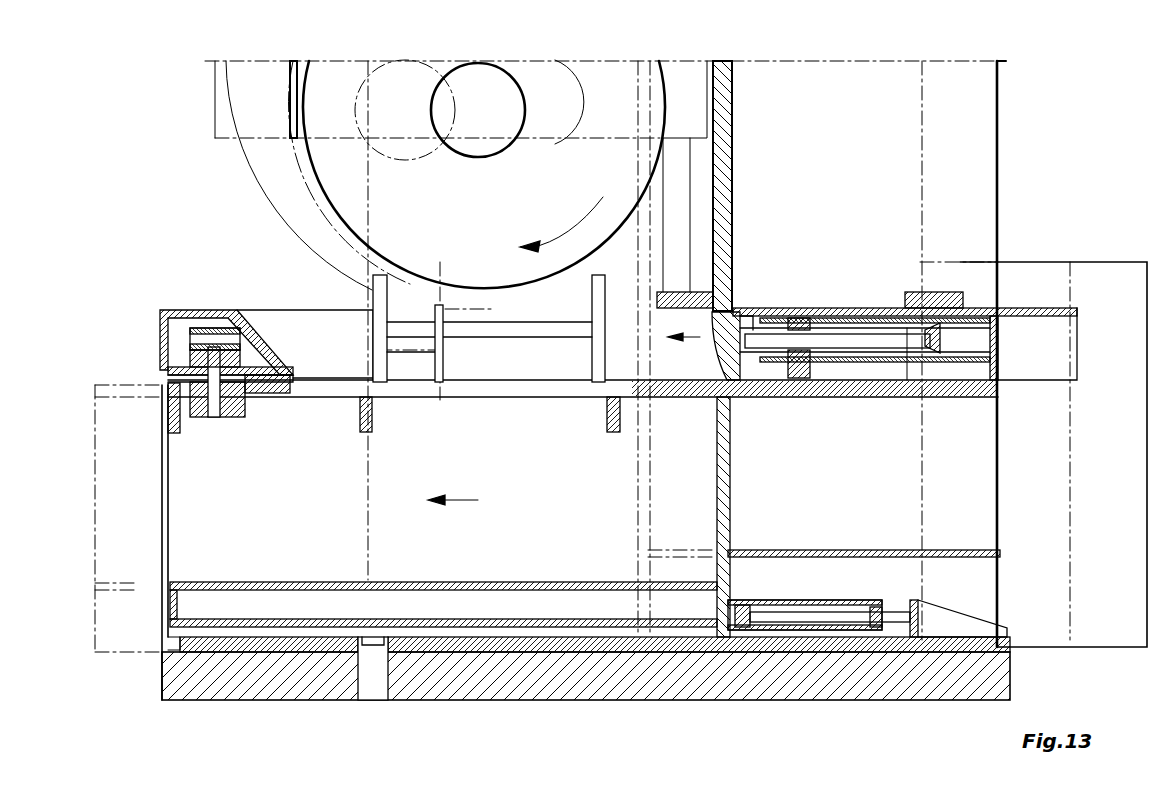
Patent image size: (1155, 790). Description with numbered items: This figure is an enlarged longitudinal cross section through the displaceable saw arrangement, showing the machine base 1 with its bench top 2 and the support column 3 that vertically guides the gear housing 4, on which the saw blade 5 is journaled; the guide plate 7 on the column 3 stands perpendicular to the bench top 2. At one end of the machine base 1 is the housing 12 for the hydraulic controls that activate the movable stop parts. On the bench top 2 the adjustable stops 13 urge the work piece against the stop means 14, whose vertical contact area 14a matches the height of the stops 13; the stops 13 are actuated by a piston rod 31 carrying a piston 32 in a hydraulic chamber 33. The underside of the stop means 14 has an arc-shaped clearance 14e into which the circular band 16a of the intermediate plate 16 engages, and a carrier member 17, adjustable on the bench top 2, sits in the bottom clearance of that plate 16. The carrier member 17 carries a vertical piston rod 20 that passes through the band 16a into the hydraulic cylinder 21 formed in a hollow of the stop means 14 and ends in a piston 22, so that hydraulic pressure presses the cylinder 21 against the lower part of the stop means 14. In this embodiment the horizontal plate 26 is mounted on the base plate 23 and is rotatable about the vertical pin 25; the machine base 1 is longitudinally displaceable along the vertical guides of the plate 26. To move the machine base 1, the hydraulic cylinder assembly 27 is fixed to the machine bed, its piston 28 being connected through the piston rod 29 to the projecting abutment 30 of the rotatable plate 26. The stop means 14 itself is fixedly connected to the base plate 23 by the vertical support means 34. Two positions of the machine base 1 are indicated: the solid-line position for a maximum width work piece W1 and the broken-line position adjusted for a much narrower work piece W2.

The machine base 1 is at (236, 493).
The bench top 2 is at (555, 392).
The support column 3 is at (998, 90).
The gear housing 4 is at (297, 94).
The saw blade 5 is at (333, 162).
The guide plate 7 is at (725, 166).
The housing 12 is at (1105, 647).
The adjustable stops 13 is at (780, 312).
The stop means 14 is at (307, 318).
The vertical contact area 14a is at (372, 355).
The clearance 14e is at (167, 360).
The intermediate plate 16 is at (165, 400).
The circular band 16a is at (190, 366).
The carrier member 17 is at (200, 420).
The piston rod 20 is at (161, 327).
The hydraulic cylinder 21 is at (225, 335).
The piston 22 is at (200, 352).
The base plate 23 is at (656, 695).
The vertical pin 25 is at (370, 685).
The horizontal plate 26 is at (210, 648).
The hydraulic cylinder assembly 27 is at (740, 630).
The piston 28 is at (757, 625).
The piston rod 29 is at (812, 625).
The projecting abutment 30 is at (913, 630).
The piston rod 31 is at (842, 340).
The piston 32 is at (955, 320).
The hydraulic chamber 33 is at (898, 322).
The vertical support means 34 is at (163, 570).
The workpiece W1 is at (462, 330).
The narrower work piece W2 is at (410, 352).